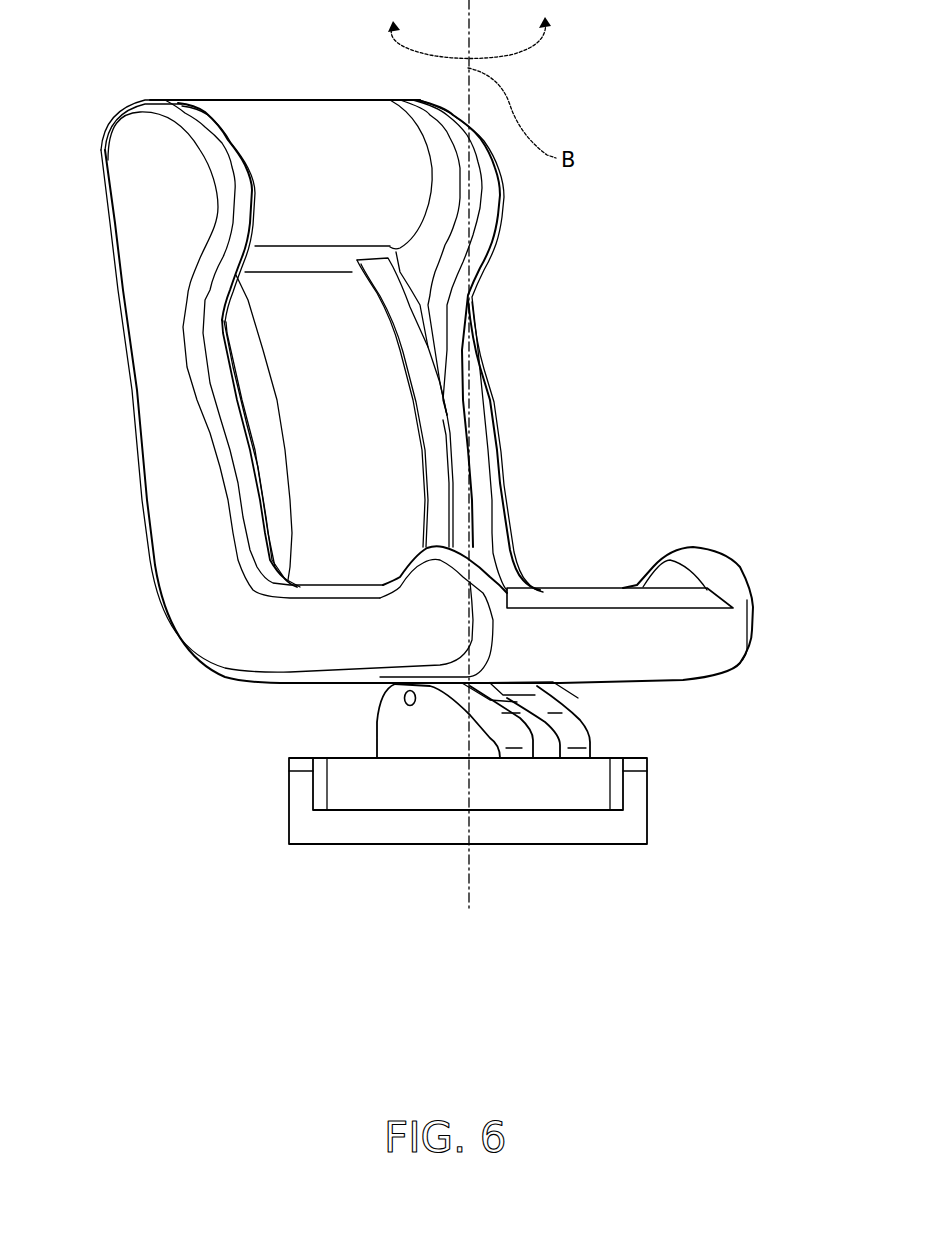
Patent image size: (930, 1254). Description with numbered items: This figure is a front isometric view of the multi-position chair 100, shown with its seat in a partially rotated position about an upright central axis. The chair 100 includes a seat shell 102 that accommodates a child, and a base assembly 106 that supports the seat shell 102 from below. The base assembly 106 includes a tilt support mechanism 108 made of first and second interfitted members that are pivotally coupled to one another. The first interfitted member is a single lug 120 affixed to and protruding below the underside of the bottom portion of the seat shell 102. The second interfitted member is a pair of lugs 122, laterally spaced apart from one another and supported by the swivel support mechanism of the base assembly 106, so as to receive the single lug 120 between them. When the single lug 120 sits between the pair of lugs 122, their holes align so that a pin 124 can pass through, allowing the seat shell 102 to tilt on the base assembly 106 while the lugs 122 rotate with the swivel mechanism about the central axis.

The multi-position chair 100 is at (661, 124).
The seat shell 102 is at (499, 391).
The base assembly 106 is at (680, 700).
The tilt support mechanism 108 is at (352, 699).
The single lug 120 is at (490, 700).
The pair of lugs 122 is at (520, 735).
The pin 124 is at (402, 703).